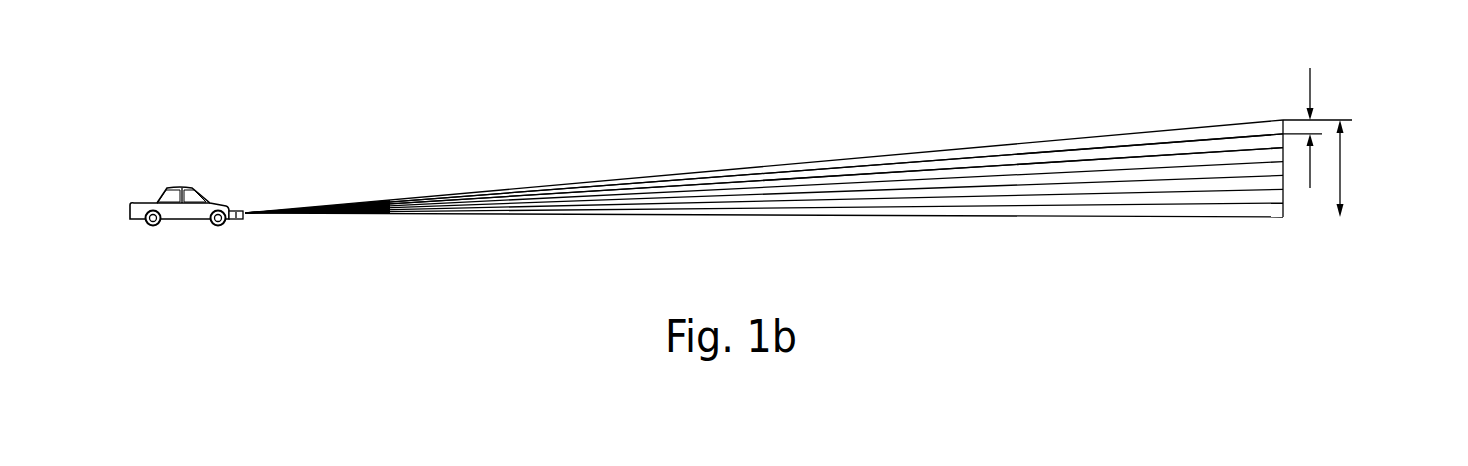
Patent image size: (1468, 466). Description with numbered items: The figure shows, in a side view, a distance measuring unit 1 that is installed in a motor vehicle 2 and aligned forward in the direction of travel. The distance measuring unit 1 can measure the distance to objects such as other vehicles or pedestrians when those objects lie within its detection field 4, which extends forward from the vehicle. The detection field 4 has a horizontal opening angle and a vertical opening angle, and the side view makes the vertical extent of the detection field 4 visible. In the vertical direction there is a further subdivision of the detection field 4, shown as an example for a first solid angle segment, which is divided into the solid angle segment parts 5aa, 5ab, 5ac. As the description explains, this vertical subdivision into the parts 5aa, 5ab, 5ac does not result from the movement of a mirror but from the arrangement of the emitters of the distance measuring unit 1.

The distance measuring unit 1 is at (238, 208).
The motor vehicle 2 is at (150, 177).
The detection field 4 is at (690, 157).
The solid angle segment part 5aa is at (967, 153).
The solid angle segment part 5ab is at (1095, 155).
The solid angle segment part 5ac is at (1215, 160).